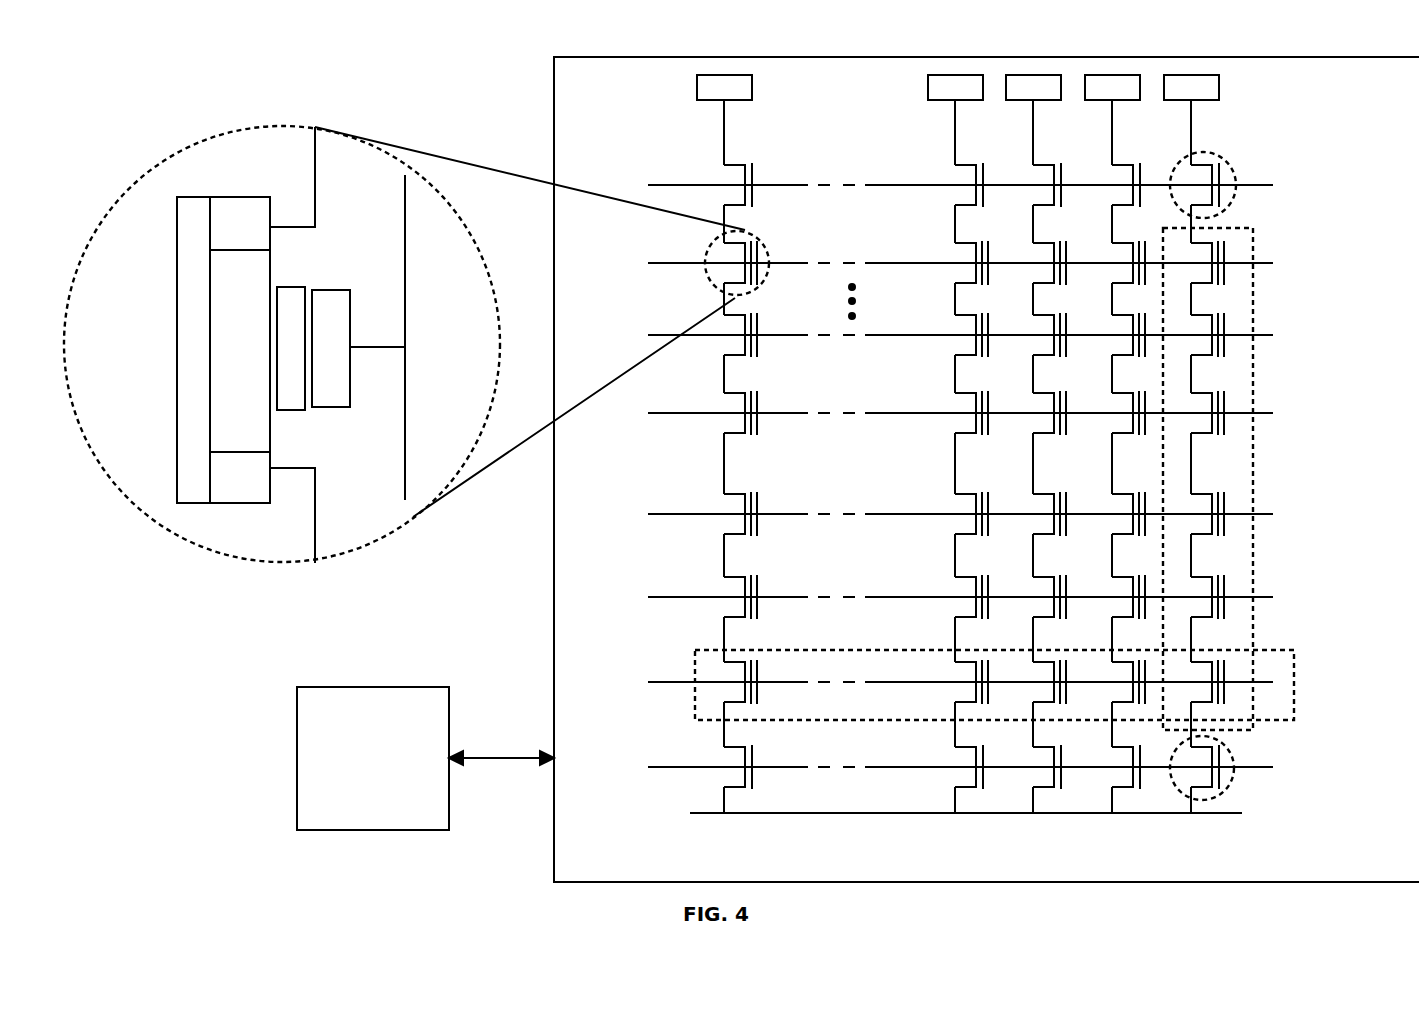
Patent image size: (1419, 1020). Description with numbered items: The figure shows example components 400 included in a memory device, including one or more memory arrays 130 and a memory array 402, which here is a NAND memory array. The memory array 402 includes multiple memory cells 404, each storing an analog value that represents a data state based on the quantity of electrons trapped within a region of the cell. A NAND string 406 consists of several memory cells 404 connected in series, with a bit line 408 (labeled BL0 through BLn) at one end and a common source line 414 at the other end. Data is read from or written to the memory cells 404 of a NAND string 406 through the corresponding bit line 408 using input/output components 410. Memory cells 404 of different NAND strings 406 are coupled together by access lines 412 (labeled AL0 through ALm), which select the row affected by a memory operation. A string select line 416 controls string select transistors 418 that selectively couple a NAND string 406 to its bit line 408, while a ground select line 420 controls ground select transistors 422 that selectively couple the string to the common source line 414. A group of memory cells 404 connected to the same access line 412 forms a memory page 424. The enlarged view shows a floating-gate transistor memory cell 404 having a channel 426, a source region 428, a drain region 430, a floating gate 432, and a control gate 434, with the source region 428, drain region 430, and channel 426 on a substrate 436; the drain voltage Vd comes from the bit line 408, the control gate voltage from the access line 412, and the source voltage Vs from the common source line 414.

The example components 400 is at (180, 50).
The memory array 402 is at (554, 60).
The memory cell 404 is at (765, 252).
The NAND string 406 is at (1253, 305).
The bit line 408 is at (1191, 133).
The input/output component 410 is at (1218, 82).
The access line 412 is at (665, 686).
The common source line 414 is at (815, 815).
The string select line 416 is at (688, 183).
The string select transistor 418 is at (1228, 205).
The ground select line 420 is at (665, 770).
The ground select transistor 422 is at (1228, 785).
The memory page 424 is at (1294, 660).
The channel 426 is at (219, 368).
The source region 428 is at (219, 489).
The drain region 430 is at (219, 234).
The floating gate 432 is at (291, 287).
The control gate 434 is at (328, 408).
The substrate 436 is at (195, 390).
The memory array 130 is at (354, 784).